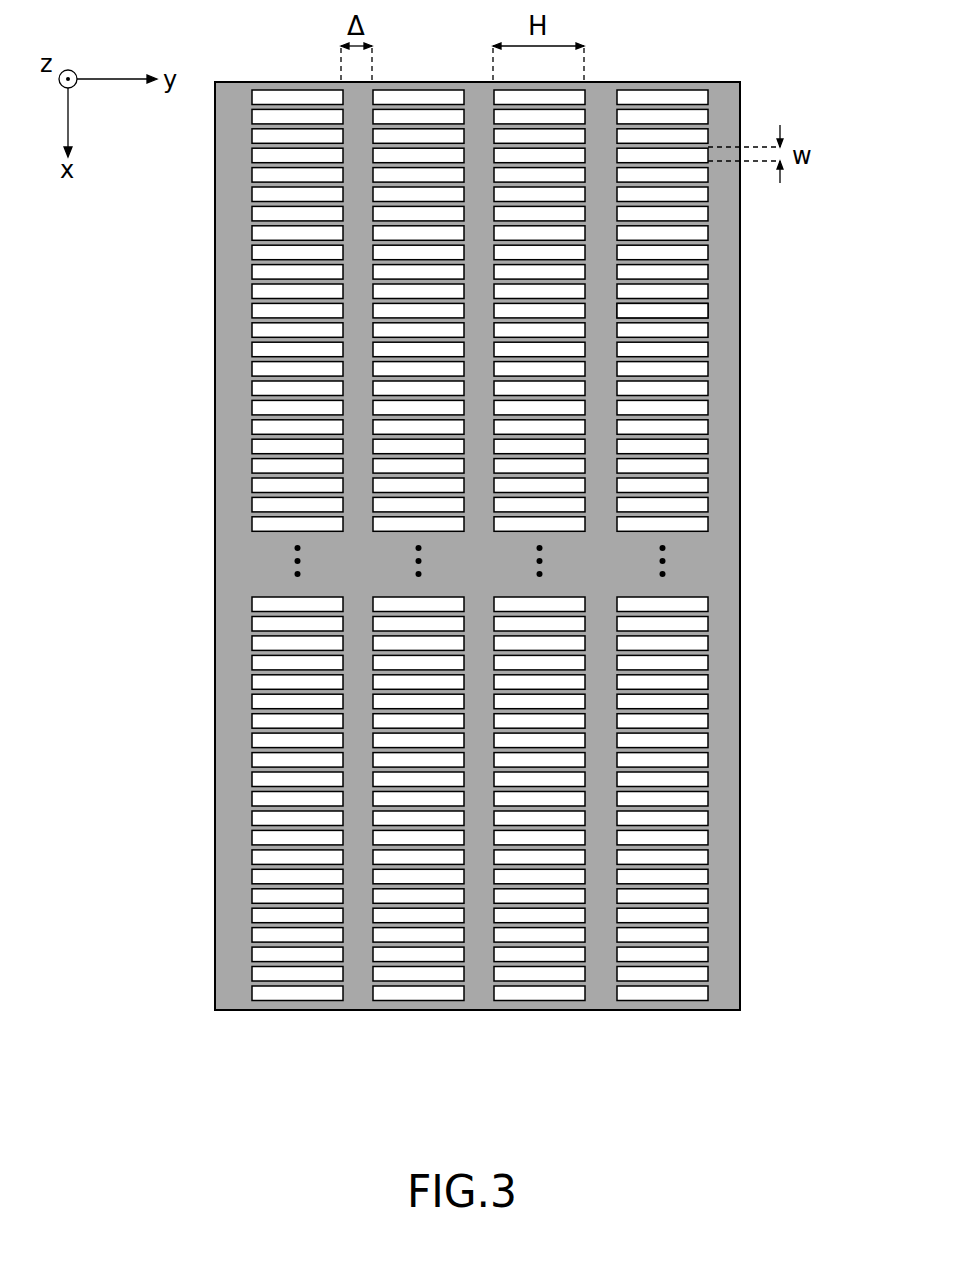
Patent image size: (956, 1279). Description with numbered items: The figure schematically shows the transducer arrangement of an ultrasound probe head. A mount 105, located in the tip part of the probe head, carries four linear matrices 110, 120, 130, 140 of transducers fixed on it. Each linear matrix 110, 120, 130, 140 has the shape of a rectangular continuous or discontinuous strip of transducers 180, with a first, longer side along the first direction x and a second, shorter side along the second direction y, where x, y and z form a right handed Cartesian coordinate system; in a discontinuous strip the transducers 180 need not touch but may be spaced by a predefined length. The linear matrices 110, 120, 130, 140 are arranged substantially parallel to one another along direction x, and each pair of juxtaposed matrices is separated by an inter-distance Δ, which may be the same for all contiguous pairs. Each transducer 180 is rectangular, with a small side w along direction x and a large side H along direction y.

The mount 105 is at (232, 568).
The linear matrix of transducers 110 is at (295, 1018).
The linear matrix of transducers 120 is at (419, 1018).
The linear matrix of transducers 130 is at (545, 1018).
The linear matrix of transducers 140 is at (663, 1018).
The transducer 180 is at (698, 312).